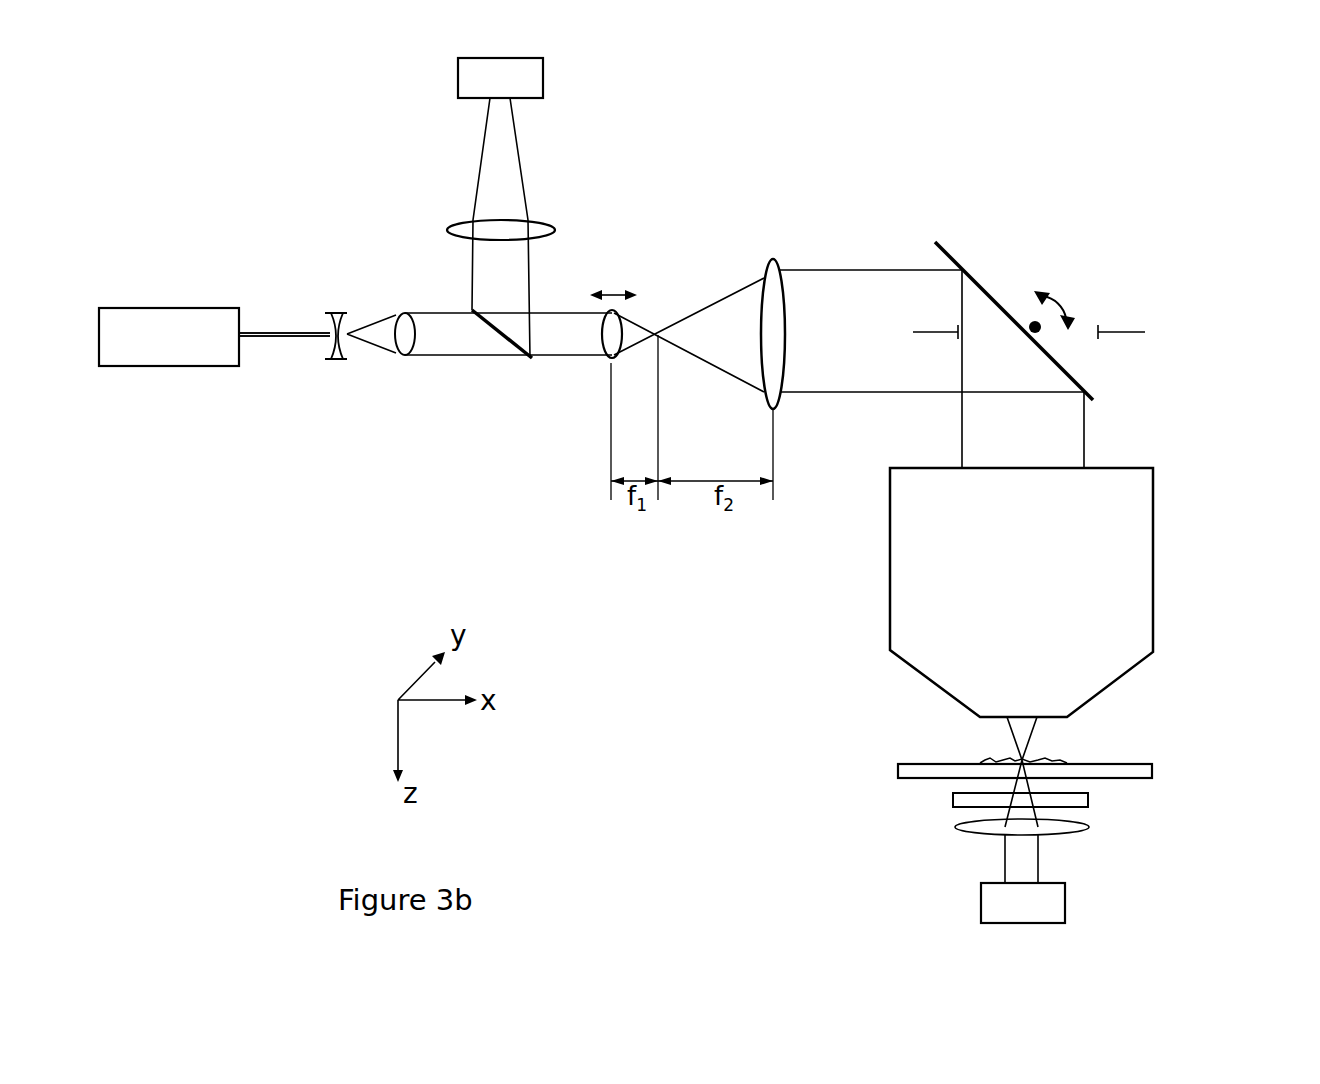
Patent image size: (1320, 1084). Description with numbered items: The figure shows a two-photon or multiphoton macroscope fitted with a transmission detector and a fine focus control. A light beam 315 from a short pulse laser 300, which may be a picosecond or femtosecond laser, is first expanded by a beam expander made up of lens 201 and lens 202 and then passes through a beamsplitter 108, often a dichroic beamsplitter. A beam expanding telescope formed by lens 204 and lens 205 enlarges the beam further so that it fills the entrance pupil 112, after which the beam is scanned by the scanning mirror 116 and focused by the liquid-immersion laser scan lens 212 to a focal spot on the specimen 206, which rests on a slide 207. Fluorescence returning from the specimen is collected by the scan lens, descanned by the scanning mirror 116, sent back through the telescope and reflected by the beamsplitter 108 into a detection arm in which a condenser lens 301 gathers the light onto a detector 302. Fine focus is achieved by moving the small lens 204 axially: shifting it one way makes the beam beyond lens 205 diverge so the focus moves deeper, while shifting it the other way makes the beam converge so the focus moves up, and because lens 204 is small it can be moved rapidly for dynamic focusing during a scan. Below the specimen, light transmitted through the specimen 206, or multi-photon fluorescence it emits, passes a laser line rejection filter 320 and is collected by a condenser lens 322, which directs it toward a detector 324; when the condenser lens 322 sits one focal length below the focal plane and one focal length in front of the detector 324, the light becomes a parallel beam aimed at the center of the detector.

The short pulse laser 300 is at (133, 307).
The light beam 315 is at (265, 333).
The lens 201 is at (333, 362).
The lens 202 is at (403, 358).
The beamsplitter 108 is at (512, 343).
The condenser lens 301 is at (545, 225).
The detector 302 is at (545, 77).
The lens 204 is at (610, 364).
The lens 205 is at (774, 406).
The scanning mirror 116 is at (953, 257).
The entrance pupil 112 is at (1117, 332).
The liquid-immersion laser scan lens 212 is at (1155, 562).
The specimen 206 is at (987, 762).
The slide 207 is at (1152, 770).
The laser line rejection filter 320 is at (1088, 800).
The condenser lens 322 is at (1092, 825).
The detector 324 is at (1065, 888).